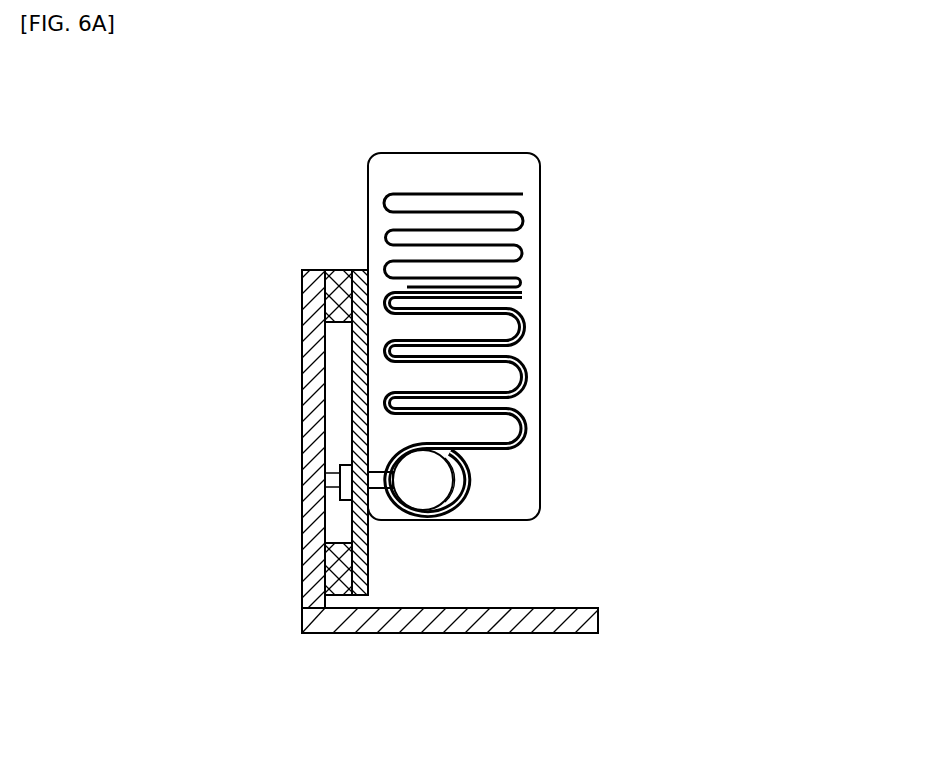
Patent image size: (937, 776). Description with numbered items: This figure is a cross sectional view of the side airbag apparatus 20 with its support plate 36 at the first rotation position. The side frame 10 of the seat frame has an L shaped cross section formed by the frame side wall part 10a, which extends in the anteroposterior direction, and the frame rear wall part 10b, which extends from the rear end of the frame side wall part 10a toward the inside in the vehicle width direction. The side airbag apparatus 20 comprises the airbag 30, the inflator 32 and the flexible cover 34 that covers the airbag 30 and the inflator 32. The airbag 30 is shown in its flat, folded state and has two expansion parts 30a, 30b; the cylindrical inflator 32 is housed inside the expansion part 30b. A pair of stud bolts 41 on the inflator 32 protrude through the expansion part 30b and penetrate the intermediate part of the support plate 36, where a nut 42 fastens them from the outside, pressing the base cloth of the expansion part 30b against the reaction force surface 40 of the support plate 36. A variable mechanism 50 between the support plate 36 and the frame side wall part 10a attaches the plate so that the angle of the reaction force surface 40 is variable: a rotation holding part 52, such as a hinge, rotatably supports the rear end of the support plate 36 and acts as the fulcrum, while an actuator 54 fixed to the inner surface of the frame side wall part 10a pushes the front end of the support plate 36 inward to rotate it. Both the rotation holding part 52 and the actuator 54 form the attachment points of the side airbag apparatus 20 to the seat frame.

The side airbag apparatus 20 is at (505, 98).
The cover 34 is at (542, 205).
The airbag 30 is at (536, 354).
The expansion part 30a is at (524, 253).
The expansion part 30b is at (530, 422).
The inflator 32 is at (433, 496).
The variable mechanism 50 is at (337, 379).
The actuator 54 is at (337, 268).
The rotation holding part 52 is at (347, 570).
The support plate 36 is at (344, 369).
The reaction force surface 40 is at (379, 377).
The stud bolt 41 is at (369, 484).
The nut 42 is at (345, 498).
The side frame 10 is at (421, 516).
The frame side wall part 10a is at (305, 553).
The frame rear wall part 10b is at (390, 631).